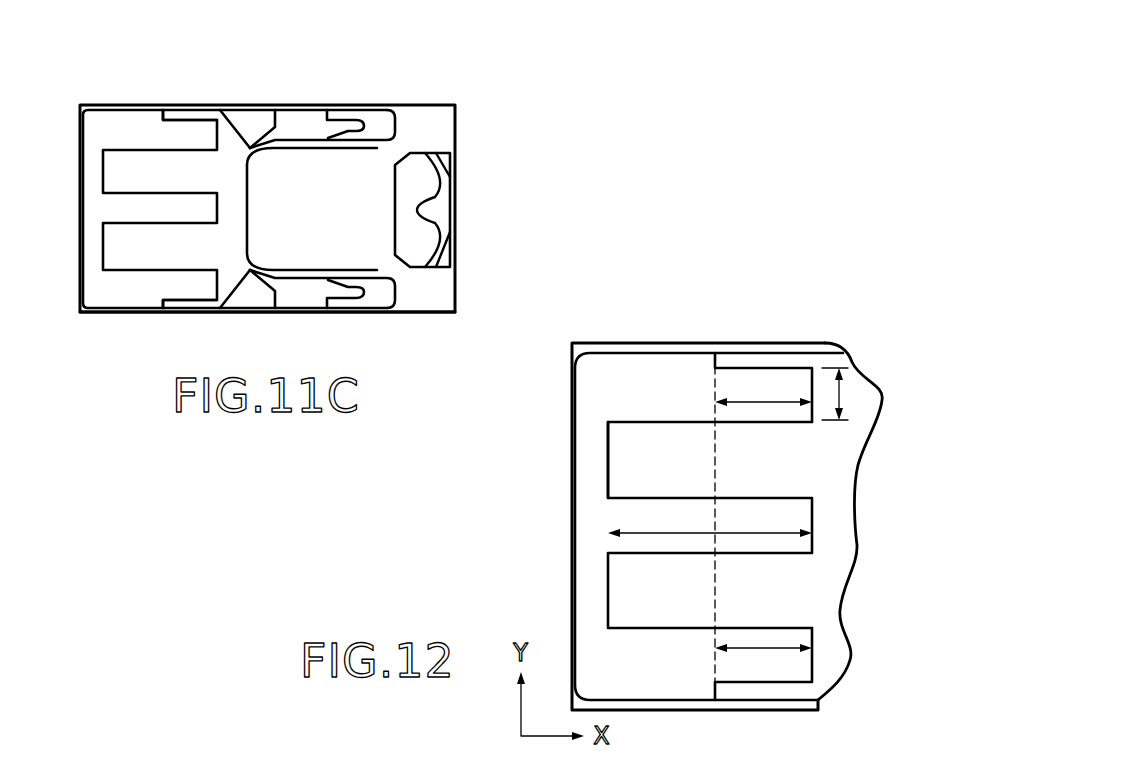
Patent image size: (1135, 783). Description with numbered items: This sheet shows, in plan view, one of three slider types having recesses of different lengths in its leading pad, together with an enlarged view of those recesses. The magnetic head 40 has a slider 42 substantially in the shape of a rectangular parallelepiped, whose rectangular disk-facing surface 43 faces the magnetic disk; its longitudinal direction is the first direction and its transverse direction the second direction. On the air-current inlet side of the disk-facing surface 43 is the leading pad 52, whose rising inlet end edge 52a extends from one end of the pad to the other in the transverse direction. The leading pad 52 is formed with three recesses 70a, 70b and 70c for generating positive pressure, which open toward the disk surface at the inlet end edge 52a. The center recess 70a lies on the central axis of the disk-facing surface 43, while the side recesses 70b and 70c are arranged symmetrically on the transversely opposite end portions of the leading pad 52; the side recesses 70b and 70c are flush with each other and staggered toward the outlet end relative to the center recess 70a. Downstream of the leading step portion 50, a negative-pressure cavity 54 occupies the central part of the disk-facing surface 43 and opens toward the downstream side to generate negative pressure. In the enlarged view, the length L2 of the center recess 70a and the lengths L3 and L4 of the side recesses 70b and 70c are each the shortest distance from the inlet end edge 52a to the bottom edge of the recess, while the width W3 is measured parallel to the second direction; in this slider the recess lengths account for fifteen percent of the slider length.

In FIG. 11C, the magnetic head 40 is at (368, 92).
In FIG. 11C, the slider 42 is at (102, 313).
In FIG. 12, the slider 42 is at (702, 342).
In FIG. 11C, the disk-facing surface 43 is at (430, 109).
In FIG. 11C, the leading step portion 50 is at (117, 110).
In FIG. 12, the leading step portion 50 is at (630, 363).
In FIG. 11C, the leading pad 52 is at (240, 224).
In FIG. 12, the leading pad 52 is at (835, 597).
In FIG. 12, the inlet end edge 52a is at (607, 460).
In FIG. 11C, the negative-pressure cavity 54 is at (296, 166).
In FIG. 11C, the center recess 70a is at (105, 210).
In FIG. 12, the center recess 70a is at (626, 512).
In FIG. 11C, the side recess 70b is at (184, 119).
In FIG. 12, the side recess 70b is at (765, 380).
In FIG. 11C, the side recess 70c is at (181, 301).
In FIG. 12, the side recess 70c is at (768, 673).
In FIG. 12, the length of center recess L2 is at (710, 520).
In FIG. 12, the length of side recess L3 is at (766, 406).
In FIG. 12, the length of side recess L4 is at (768, 646).
In FIG. 12, the width of recess W3 is at (840, 395).